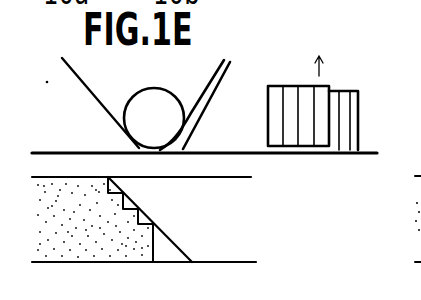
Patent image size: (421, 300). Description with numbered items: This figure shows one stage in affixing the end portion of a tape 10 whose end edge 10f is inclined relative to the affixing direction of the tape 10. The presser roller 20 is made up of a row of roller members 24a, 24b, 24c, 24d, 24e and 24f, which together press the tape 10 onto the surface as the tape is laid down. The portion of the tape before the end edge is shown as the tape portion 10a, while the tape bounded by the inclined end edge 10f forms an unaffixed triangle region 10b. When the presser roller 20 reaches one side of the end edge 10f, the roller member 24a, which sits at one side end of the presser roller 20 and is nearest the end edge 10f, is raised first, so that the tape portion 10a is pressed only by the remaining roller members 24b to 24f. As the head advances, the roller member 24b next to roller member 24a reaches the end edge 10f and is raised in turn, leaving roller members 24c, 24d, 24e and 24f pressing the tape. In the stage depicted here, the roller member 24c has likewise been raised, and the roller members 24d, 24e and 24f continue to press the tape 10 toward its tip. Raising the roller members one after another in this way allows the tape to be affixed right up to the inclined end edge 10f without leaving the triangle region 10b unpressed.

The tape 10 is at (202, 96).
The tape portion before the end edge 10a is at (77, 233).
The unaffixed triangle region 10b is at (165, 247).
The end edge 10f is at (140, 200).
The presser roller 20 is at (121, 109).
The roller member 24a is at (268, 106).
The roller member 24b is at (290, 98).
The roller member 24c is at (290, 98).
The roller member 24d is at (321, 97).
The roller member 24e is at (337, 153).
The roller member 24f is at (350, 155).